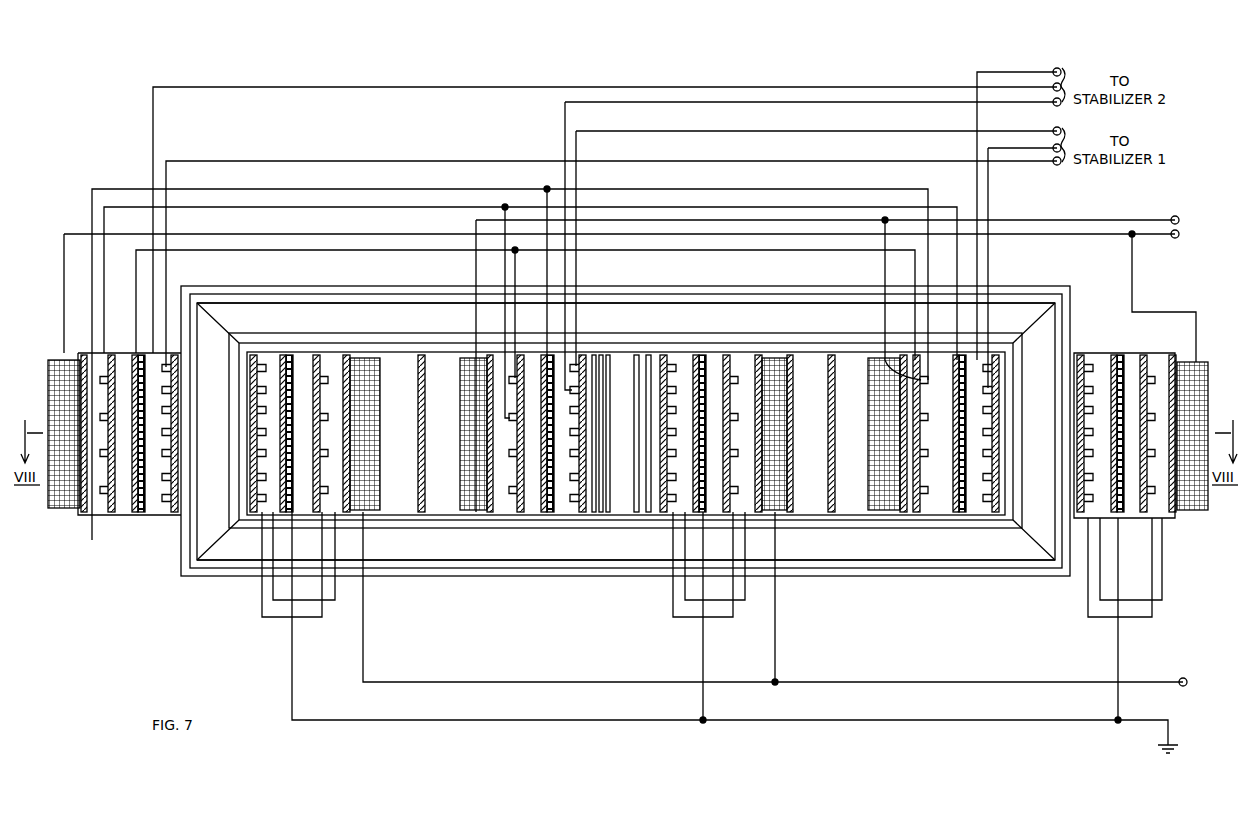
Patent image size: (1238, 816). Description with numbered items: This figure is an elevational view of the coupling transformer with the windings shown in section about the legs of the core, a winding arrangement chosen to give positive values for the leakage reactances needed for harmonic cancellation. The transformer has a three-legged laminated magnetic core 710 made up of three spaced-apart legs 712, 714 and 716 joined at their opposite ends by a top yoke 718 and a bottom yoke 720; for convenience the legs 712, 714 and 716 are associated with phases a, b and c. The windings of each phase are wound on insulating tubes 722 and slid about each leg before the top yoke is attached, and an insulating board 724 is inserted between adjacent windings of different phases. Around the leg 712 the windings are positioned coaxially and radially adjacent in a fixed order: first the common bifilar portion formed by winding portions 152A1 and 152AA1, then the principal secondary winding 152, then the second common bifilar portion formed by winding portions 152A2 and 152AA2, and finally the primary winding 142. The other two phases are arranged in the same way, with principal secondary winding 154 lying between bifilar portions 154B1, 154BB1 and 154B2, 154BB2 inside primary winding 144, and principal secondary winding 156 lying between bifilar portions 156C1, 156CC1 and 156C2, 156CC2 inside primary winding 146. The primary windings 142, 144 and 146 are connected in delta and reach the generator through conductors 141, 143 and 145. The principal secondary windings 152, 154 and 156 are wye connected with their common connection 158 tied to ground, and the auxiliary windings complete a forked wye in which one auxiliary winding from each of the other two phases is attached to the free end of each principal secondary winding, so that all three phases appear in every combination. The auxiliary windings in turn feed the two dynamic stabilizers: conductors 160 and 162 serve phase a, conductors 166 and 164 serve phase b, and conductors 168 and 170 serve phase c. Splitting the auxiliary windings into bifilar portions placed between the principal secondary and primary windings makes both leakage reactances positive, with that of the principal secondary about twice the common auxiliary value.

The magnetic core 710 is at (641, 639).
The leg 712 is at (180, 564).
The leg 714 is at (634, 461).
The leg 716 is at (1049, 471).
The top yoke 718 is at (745, 282).
The bottom yoke 720 is at (560, 600).
The insulating tube 722 is at (110, 360).
The insulating board 724 is at (420, 408).
The conductor 141 is at (1104, 243).
The primary winding 142 is at (373, 478).
The conductor 143 is at (1129, 222).
The primary winding 144 is at (455, 490).
The conductor 145 is at (1158, 682).
The primary winding 146 is at (870, 490).
The principal secondary winding 152 is at (128, 354).
The winding portion 152A1 is at (196, 360).
The winding portion 152A2 is at (110, 512).
The winding portion 152AA1 is at (166, 354).
The winding portion 152AA2 is at (92, 540).
The principal secondary winding 154 is at (670, 360).
The winding portion 154B1 is at (582, 370).
The winding portion 154B2 is at (495, 365).
The winding portion 154BB1 is at (615, 514).
The winding portion 154BB2 is at (498, 304).
The principal secondary winding 156 is at (947, 523).
The winding portion 156C1 is at (1018, 355).
The winding portion 156C2 is at (875, 408).
The winding portion 156CC1 is at (994, 299).
The winding portion 156CC2 is at (892, 310).
The common connection 158 is at (1112, 720).
The conductor 160 is at (814, 131).
The conductor 162 is at (973, 78).
The conductor 164 is at (478, 88).
The conductor 166 is at (990, 186).
The conductor 168 is at (814, 159).
The conductor 170 is at (562, 146).